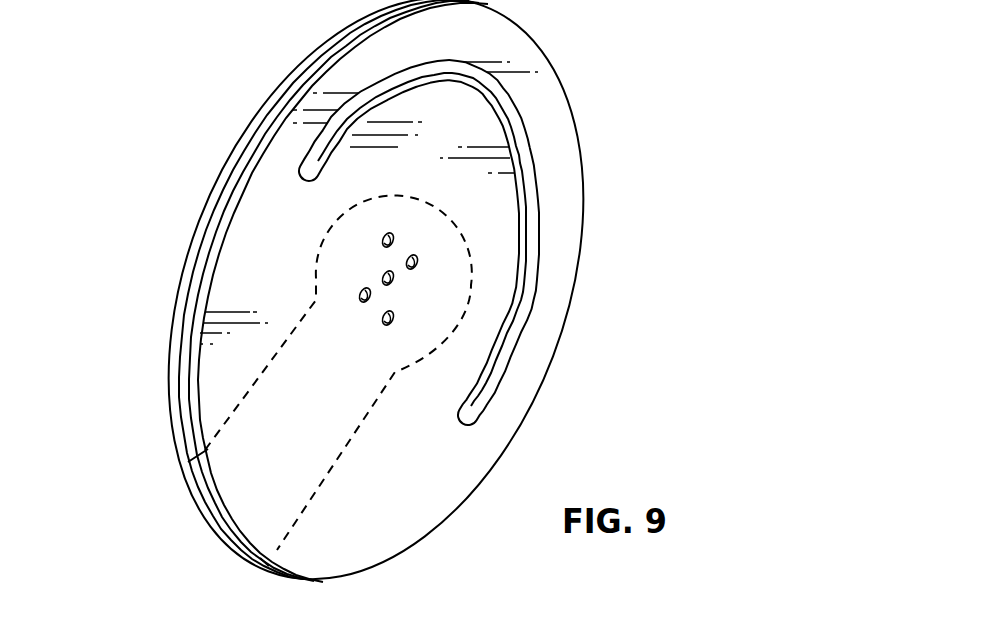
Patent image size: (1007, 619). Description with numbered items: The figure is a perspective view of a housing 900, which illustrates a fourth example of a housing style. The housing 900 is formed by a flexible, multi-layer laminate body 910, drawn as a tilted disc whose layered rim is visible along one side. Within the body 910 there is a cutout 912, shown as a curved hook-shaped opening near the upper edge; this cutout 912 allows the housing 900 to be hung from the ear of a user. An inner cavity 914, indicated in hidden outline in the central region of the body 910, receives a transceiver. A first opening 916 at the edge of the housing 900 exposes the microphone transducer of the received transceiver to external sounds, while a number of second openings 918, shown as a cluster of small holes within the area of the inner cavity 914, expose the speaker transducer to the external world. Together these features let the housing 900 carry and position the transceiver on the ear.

The housing 900 is at (340, 309).
The multi-layer laminate body 910 is at (233, 145).
The cutout 912 is at (515, 106).
The inner cavity 914 is at (337, 458).
The first opening 916 is at (210, 508).
The second openings 918 is at (418, 298).